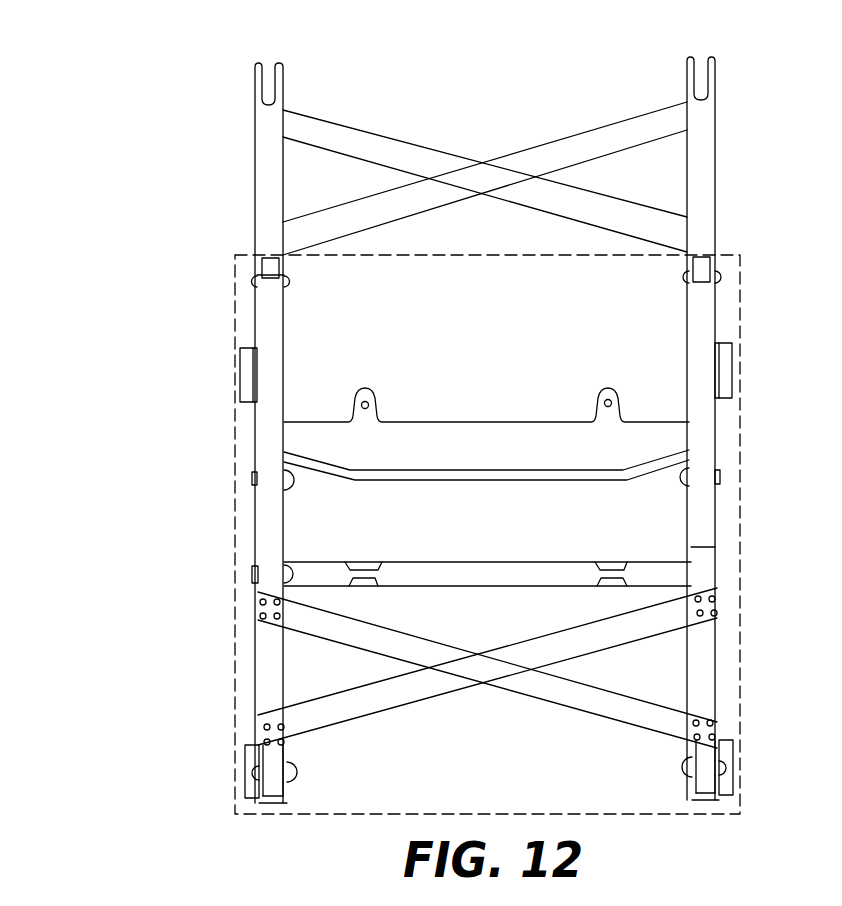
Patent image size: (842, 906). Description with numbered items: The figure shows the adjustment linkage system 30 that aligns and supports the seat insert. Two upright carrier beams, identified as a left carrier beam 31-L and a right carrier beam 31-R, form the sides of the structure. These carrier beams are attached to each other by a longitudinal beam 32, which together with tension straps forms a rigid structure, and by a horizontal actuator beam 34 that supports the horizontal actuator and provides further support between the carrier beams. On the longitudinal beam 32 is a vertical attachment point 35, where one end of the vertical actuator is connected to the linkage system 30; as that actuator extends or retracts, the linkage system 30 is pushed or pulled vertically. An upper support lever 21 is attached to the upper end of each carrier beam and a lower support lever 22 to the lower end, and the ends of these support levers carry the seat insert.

The upper support lever 21 is at (256, 171).
The lower support lever 22 is at (255, 771).
The adjustment linkage system 30 is at (740, 363).
The right carrier beam 31-R is at (257, 335).
The left carrier beam 31-L is at (715, 318).
The longitudinal beam 32 is at (640, 440).
The horizontal actuator beam 34 is at (668, 572).
The vertical attachment point 35 is at (374, 390).